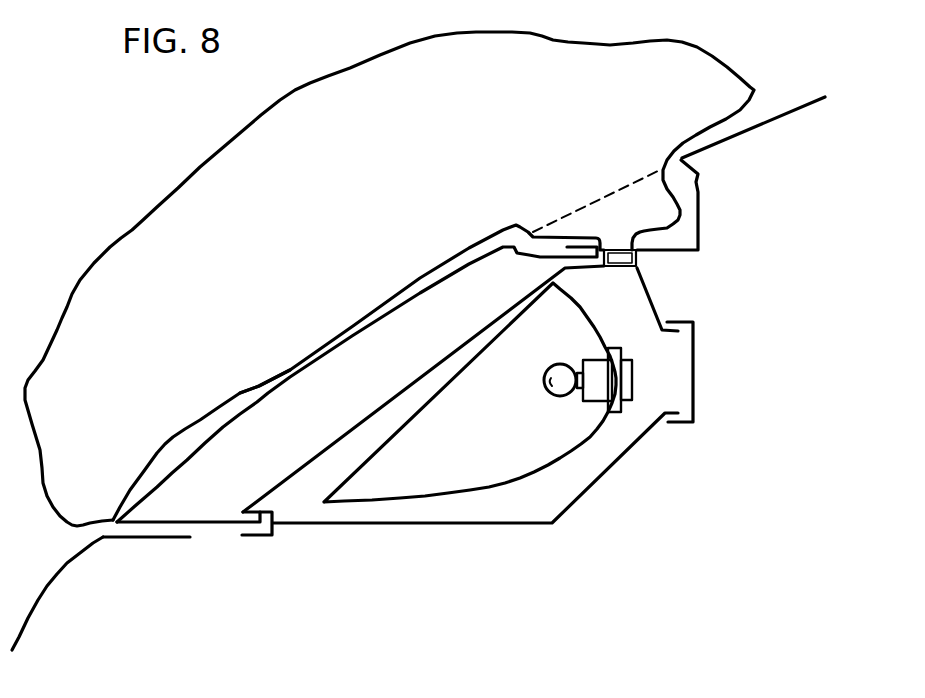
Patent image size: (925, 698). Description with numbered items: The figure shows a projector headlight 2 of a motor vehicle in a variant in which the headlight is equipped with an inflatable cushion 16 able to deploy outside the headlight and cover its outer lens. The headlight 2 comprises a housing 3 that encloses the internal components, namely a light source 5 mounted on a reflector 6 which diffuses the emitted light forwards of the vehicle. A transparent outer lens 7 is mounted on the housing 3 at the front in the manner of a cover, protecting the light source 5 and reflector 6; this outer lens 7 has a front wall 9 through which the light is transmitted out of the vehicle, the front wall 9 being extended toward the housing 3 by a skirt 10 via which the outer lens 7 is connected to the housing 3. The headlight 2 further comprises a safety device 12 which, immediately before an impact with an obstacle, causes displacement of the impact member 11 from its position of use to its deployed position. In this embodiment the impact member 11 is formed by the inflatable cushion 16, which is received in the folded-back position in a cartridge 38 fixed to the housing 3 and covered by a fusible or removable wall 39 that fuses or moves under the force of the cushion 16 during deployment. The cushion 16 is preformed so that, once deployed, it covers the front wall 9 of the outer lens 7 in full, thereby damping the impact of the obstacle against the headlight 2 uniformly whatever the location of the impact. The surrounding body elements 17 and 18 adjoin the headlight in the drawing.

The projector headlight 2 is at (468, 466).
The housing 3 is at (587, 492).
The light source 5 is at (543, 383).
The reflector 6 is at (497, 482).
The outer lens 7 is at (264, 390).
The front wall 9 is at (380, 313).
The skirt 10 is at (213, 525).
The impact member 11 is at (389, 279).
The inflatable cushion 16 is at (155, 208).
The safety device 12 is at (715, 218).
The lower body panel 17 is at (38, 597).
The upper body panel edge 18 is at (772, 115).
The cartridge 38 is at (637, 262).
The fusible or removable wall 39 is at (587, 202).